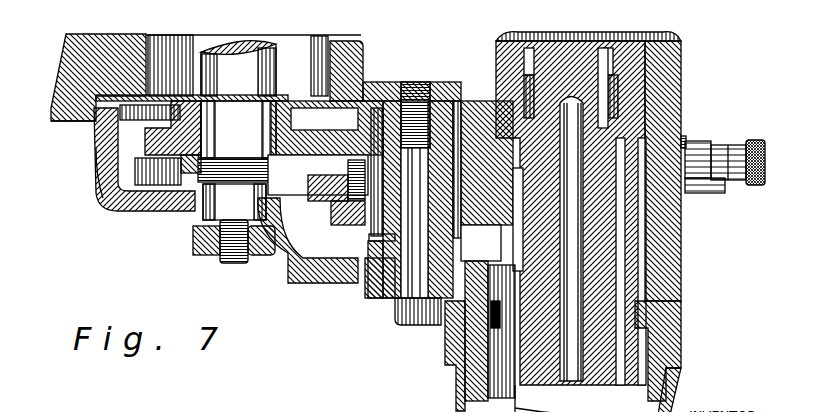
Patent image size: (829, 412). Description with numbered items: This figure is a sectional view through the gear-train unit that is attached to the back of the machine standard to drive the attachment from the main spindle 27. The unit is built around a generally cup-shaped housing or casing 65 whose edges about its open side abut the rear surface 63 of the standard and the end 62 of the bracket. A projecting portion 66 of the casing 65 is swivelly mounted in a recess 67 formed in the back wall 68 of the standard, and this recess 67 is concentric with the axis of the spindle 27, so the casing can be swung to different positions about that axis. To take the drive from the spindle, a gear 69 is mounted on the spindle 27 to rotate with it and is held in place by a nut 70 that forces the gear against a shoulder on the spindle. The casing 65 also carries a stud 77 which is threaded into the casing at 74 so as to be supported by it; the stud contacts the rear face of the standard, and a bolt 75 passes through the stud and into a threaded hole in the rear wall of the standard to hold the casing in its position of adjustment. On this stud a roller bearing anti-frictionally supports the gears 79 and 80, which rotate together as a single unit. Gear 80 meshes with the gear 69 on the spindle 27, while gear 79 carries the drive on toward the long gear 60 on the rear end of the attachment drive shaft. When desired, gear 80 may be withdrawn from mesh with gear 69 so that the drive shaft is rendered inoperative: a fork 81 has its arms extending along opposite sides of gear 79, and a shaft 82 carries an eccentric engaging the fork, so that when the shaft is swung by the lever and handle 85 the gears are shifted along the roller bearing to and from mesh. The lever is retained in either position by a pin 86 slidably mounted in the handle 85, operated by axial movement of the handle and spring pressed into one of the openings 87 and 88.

The spindle 27 is at (268, 54).
The long gear 60 is at (503, 357).
The end of the bracket 62 is at (655, 127).
The rear surface of the standard 63 is at (64, 115).
The cup-shaped housing or casing 65 is at (143, 206).
The projecting portion of the casing 66 is at (80, 138).
The recess 67 is at (88, 97).
The back wall of the standard 68 is at (63, 50).
The gear 69 is at (104, 195).
The nut 70 is at (183, 165).
The threaded portion of the casing 74 is at (350, 276).
The bolt 75 is at (395, 318).
The stud 77 is at (325, 275).
The gear 79 is at (275, 262).
The gear 80 is at (350, 118).
The fork 81 is at (493, 212).
The shaft 82 is at (717, 182).
The handle 85 is at (757, 158).
The pin 86 is at (690, 192).
The opening 87 is at (672, 131).
The opening 88 is at (667, 247).